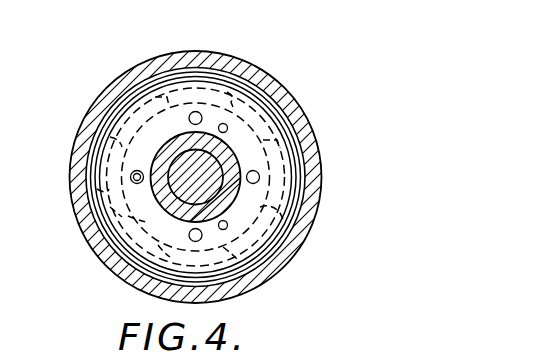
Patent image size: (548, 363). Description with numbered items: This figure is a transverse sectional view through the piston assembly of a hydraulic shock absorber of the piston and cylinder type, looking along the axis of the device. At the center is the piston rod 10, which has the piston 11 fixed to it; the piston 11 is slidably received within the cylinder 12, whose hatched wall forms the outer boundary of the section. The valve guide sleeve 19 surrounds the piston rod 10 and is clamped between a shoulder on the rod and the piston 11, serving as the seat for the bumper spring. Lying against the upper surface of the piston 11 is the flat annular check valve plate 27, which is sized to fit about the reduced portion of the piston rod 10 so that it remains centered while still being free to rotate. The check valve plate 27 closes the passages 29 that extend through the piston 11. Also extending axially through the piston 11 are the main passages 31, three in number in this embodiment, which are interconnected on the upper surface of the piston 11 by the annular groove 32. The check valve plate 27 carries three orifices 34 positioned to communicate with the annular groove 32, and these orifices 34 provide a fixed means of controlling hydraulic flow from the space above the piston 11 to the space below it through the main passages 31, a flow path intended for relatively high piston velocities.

The piston rod 10 is at (173, 160).
The piston 11 is at (98, 125).
The cylinder 12 is at (300, 112).
The valve guide sleeve 19 is at (178, 154).
The check valve plate 27 is at (120, 105).
The passages 29 is at (100, 198).
The main passages 31 is at (277, 162).
The annular groove 32 is at (137, 236).
The orifices 34 is at (227, 126).